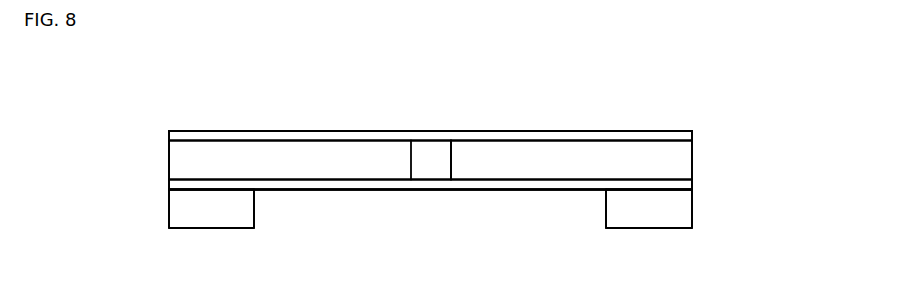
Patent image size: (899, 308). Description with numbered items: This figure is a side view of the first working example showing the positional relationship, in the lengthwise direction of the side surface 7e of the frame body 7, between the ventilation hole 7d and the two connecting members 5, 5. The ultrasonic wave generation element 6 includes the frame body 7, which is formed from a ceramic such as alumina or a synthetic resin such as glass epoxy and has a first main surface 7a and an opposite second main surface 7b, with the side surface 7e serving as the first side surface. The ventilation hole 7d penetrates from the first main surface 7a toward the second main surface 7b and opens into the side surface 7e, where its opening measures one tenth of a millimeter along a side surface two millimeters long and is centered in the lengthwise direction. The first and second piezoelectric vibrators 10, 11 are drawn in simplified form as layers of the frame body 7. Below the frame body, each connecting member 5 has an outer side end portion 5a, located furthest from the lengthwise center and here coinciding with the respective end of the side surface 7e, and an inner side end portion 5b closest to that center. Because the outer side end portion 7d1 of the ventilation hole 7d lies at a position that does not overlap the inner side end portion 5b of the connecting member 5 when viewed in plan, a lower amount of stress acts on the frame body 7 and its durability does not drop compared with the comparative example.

The connecting member 5 is at (211, 238).
The outer side end portion 5a is at (168, 207).
The inner side end portion 5b is at (255, 212).
The ultrasonic wave generation element 6 is at (695, 128).
The frame body 7 is at (183, 129).
The first main surface 7a is at (537, 131).
The second main surface 7b is at (537, 183).
The ventilation hole 7d is at (433, 148).
The outer side end portion 7d1 is at (450, 165).
The side surface 7e is at (197, 160).
The first piezoelectric vibrator 10 is at (358, 130).
The second piezoelectric vibrator 11 is at (367, 190).